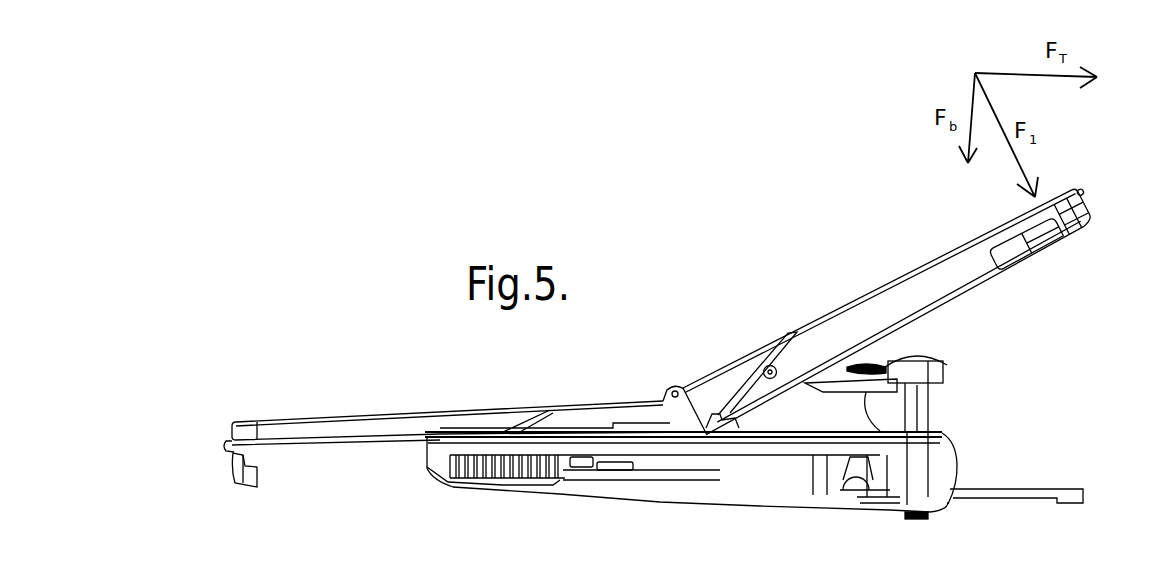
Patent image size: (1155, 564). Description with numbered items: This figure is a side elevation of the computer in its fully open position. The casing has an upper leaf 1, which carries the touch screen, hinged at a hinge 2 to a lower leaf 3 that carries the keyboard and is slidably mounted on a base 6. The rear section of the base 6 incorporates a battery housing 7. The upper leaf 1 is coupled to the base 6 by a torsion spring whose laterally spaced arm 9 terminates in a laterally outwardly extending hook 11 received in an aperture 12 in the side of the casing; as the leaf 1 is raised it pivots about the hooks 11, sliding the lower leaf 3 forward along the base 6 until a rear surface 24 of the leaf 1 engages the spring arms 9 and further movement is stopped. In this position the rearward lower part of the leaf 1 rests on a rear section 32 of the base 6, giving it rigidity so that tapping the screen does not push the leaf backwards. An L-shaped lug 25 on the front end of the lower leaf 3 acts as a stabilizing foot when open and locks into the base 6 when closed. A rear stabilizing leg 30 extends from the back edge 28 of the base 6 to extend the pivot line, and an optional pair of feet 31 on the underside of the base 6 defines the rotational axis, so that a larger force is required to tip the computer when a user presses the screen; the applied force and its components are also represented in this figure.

The upper leaf 1 is at (893, 290).
The hinge 2 is at (686, 390).
The lower leaf 3 is at (473, 420).
The base 6 is at (625, 497).
The battery housing 7 is at (858, 500).
The torsion spring arm 9 is at (838, 385).
The hook 11 is at (766, 367).
The aperture 12 is at (776, 372).
The rear surface 24 is at (938, 314).
The L-shaped lug 25 is at (233, 484).
The back edge 28 is at (952, 467).
The rear stabilizing leg 30 is at (1056, 486).
The feet 31 is at (924, 519).
The rear section 32 is at (946, 358).